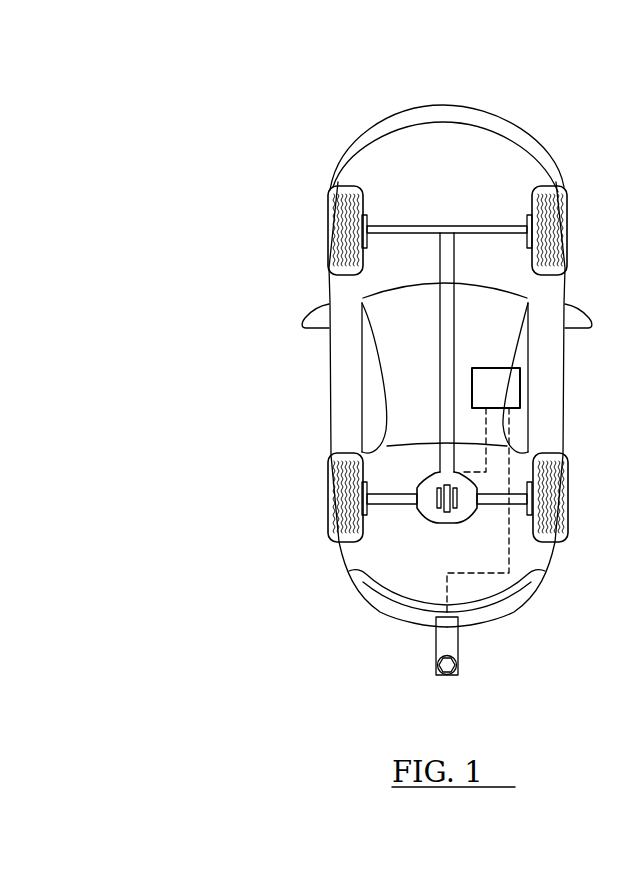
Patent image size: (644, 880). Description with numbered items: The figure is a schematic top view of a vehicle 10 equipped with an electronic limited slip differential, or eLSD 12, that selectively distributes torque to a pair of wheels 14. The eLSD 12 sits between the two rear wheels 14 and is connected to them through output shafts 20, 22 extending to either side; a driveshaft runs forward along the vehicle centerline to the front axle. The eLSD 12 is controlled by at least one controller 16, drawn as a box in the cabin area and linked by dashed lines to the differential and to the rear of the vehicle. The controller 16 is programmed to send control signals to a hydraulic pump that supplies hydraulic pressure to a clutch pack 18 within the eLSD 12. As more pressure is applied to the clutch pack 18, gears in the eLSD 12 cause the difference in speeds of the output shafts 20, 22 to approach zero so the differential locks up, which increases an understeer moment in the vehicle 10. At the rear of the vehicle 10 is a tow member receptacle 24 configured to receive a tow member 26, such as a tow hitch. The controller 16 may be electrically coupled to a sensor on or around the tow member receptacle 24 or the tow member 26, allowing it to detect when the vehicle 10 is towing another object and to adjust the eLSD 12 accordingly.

The vehicle 10 is at (291, 120).
The eLSD 12 is at (428, 473).
The wheels 14 is at (328, 520).
The controller 16 is at (520, 385).
The clutch pack 18 is at (443, 522).
The output shaft 20 is at (400, 505).
The output shaft 22 is at (492, 505).
The tow member receptacle 24 is at (458, 622).
The tow member 26 is at (460, 650).